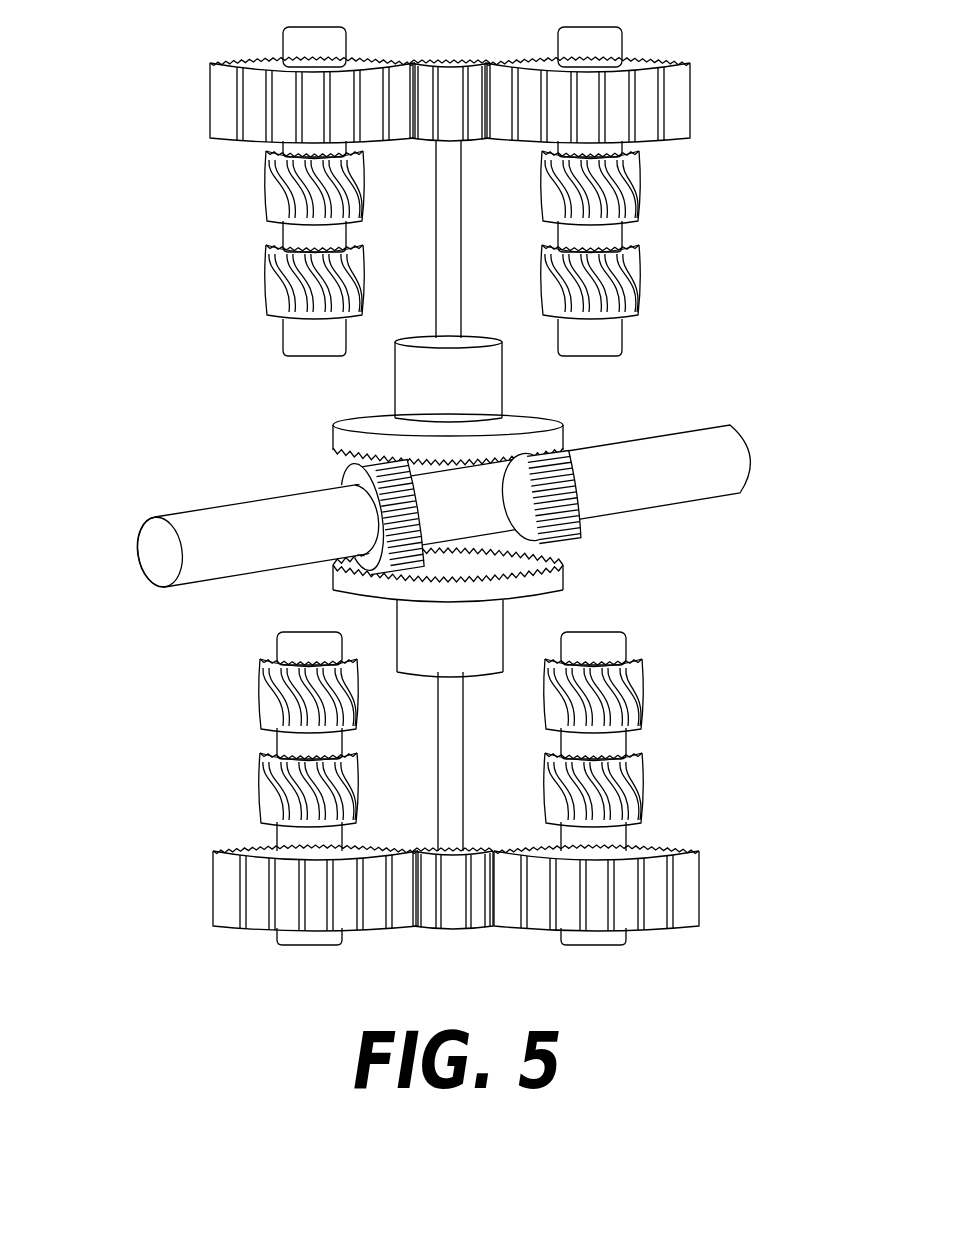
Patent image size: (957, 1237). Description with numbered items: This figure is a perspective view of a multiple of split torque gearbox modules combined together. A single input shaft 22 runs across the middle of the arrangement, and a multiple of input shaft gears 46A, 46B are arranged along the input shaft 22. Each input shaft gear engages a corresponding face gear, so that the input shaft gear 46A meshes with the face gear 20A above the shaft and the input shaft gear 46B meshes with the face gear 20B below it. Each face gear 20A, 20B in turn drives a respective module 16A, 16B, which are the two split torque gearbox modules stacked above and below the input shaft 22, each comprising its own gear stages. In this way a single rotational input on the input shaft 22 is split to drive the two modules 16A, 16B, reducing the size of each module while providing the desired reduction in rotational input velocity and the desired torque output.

The module 16A is at (707, 172).
The module 16B is at (712, 753).
The face gear 20A is at (367, 423).
The face gear 20B is at (505, 613).
The input shaft 22 is at (718, 497).
The input shaft gear 46A is at (597, 478).
The input shaft gear 46B is at (243, 518).